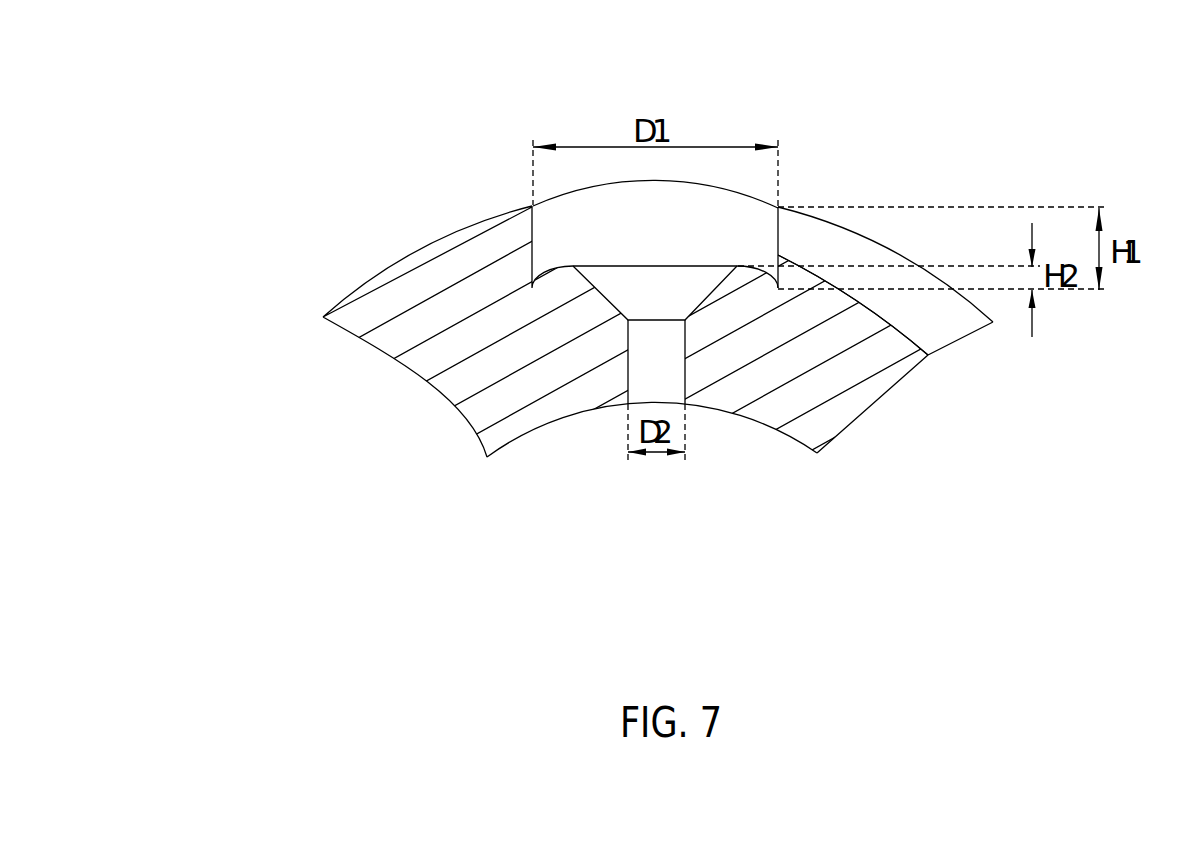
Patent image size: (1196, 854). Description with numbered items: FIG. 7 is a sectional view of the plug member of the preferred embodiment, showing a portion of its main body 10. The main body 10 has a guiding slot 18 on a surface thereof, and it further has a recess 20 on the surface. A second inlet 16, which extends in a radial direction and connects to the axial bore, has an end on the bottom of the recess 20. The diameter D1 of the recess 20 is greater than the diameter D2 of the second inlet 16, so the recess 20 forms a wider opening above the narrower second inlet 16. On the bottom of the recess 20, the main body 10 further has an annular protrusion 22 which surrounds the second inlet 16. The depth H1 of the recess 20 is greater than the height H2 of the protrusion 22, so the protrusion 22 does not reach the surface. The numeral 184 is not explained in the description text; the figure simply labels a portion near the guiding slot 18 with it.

The main body 10 is at (437, 360).
The second inlet 16 is at (643, 365).
The guiding slot 18 is at (940, 333).
The top surface portion 184 is at (819, 238).
The recess 20 is at (547, 232).
The annular protrusion 22 is at (735, 268).